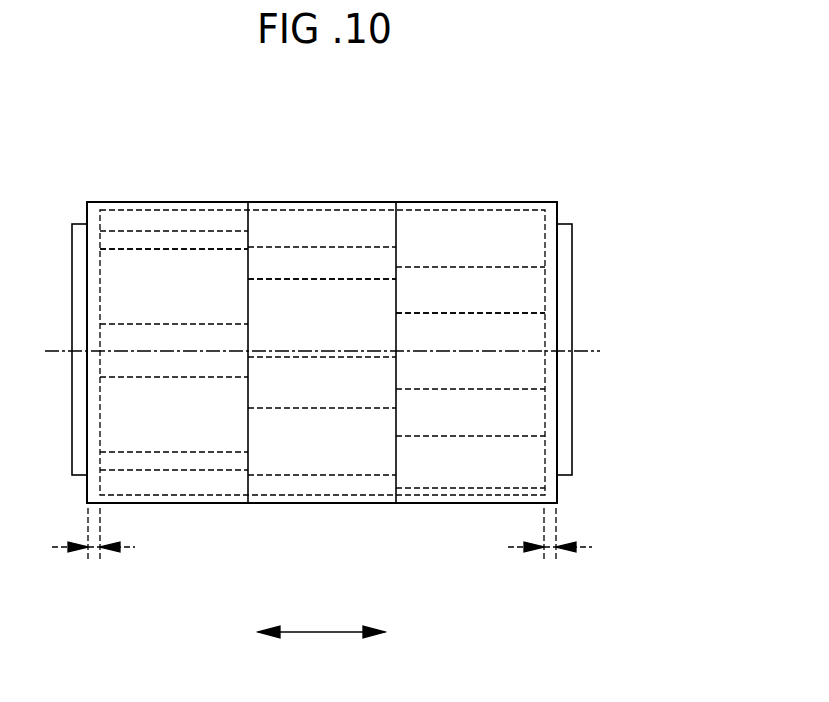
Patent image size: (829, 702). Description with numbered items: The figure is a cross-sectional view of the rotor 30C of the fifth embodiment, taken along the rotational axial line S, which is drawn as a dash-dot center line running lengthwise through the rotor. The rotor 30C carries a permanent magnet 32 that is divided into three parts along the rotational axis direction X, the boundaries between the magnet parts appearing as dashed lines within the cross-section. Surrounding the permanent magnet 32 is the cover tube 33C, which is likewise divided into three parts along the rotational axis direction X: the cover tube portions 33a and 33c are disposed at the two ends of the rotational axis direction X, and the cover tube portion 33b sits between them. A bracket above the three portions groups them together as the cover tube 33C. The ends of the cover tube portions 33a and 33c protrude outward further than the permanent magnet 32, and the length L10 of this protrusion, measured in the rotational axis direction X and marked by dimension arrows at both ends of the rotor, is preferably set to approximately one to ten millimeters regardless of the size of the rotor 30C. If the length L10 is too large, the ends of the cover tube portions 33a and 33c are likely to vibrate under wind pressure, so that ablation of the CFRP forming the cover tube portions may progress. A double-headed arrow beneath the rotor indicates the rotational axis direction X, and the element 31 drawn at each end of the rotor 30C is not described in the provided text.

The rotor 30C is at (573, 218).
The frame member 31 is at (573, 245).
The permanent magnet 32 is at (137, 248).
The cover tube portion 33a is at (190, 203).
The cover tube portion 33b is at (315, 203).
The cover tube portion 33c is at (440, 203).
The cover tube 33C is at (468, 133).
The rotational axial line S is at (588, 351).
The length L10 is at (322, 552).
The rotational axis direction X is at (321, 632).